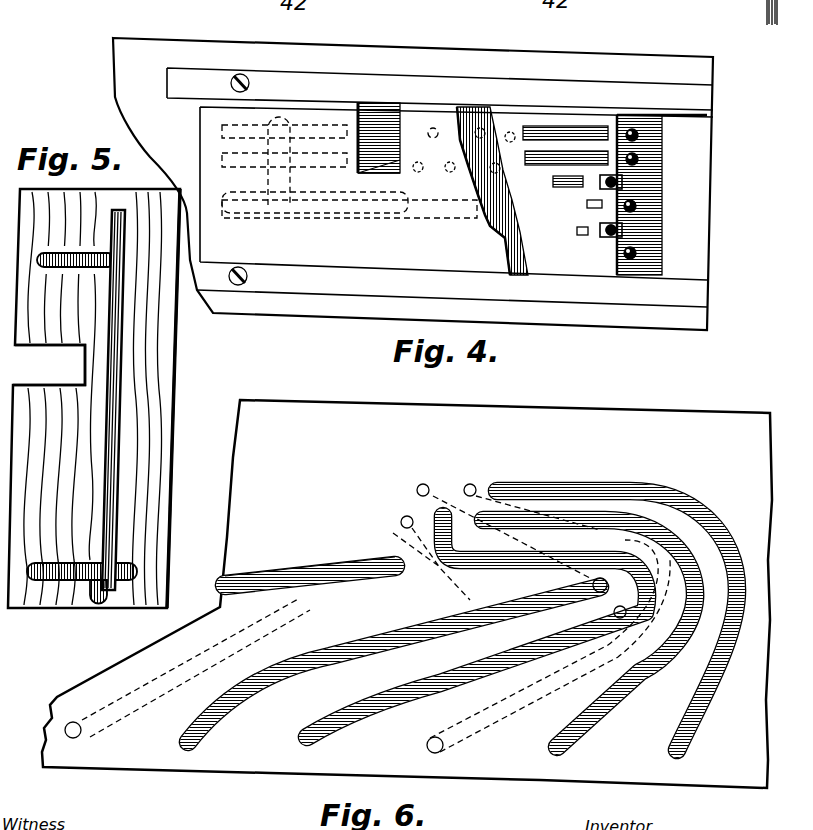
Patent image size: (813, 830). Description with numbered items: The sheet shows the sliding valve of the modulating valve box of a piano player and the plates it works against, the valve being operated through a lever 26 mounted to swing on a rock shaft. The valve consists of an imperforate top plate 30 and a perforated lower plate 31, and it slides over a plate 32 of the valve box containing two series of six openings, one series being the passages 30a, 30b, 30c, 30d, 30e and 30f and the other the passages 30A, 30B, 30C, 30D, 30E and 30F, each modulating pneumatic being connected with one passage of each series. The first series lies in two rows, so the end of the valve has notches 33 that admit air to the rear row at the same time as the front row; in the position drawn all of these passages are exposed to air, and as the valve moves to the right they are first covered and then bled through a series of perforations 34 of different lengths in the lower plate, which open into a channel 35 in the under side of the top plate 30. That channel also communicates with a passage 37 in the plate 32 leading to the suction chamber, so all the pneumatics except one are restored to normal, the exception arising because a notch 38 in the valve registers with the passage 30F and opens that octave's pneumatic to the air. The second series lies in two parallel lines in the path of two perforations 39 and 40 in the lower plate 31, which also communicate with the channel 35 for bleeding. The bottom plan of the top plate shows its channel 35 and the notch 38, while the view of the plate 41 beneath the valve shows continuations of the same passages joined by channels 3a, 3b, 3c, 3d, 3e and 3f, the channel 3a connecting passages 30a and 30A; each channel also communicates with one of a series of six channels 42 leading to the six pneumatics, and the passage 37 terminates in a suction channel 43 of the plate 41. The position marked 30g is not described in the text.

In FIG. 4, the lever 26 is at (768, 17).
In FIG. 4, the imperforate top plate 30 is at (377, 253).
In FIG. 5, the imperforate top plate 30 is at (168, 367).
In FIG. 4, the passage of the second series 30A is at (512, 133).
In FIG. 6, the passage of the second series 30A is at (505, 485).
In FIG. 4, the passage of the second series 30B is at (498, 173).
In FIG. 6, the passage of the second series 30B is at (440, 570).
In FIG. 4, the passage of the second series 30C is at (480, 128).
In FIG. 6, the passage of the second series 30C is at (471, 484).
In FIG. 4, the passage of the second series 30D is at (450, 173).
In FIG. 6, the passage of the second series 30D is at (440, 567).
In FIG. 4, the passage of the second series 30E is at (433, 128).
In FIG. 6, the passage of the second series 30E is at (423, 484).
In FIG. 4, the passage of the second series 30F is at (418, 173).
In FIG. 6, the passage of the second series 30F is at (401, 520).
In FIG. 4, the passage of the first series 30a is at (640, 135).
In FIG. 4, the passage of the first series 30b is at (640, 158).
In FIG. 6, the passage of the first series 30b is at (657, 480).
In FIG. 4, the passage of the first series 30c is at (622, 182).
In FIG. 6, the passage of the first series 30c is at (683, 505).
In FIG. 4, the passage of the first series 30d is at (637, 207).
In FIG. 6, the passage of the first series 30d is at (713, 530).
In FIG. 4, the passage of the first series 30e is at (622, 230).
In FIG. 6, the passage of the first series 30e is at (626, 610).
In FIG. 4, the passage of the first series 30f is at (634, 256).
In FIG. 6, the passage of the first series 30f is at (606, 588).
In FIG. 6, the hole 30g is at (597, 484).
In FIG. 4, the perforated lower plate 31 is at (600, 210).
In FIG. 4, the plate 32 is at (113, 90).
In FIG. 4, the notches 33 is at (600, 186).
In FIG. 4, the perforations 34 is at (600, 133).
In FIG. 4, the channel 35 is at (338, 217).
In FIG. 5, the channel 35 is at (113, 443).
In FIG. 4, the passage 37 is at (247, 213).
In FIG. 4, the notch 38 is at (398, 162).
In FIG. 5, the notch 38 is at (49, 365).
In FIG. 4, the perforation 39 is at (320, 128).
In FIG. 4, the perforation 40 is at (302, 157).
In FIG. 6, the plate 41 is at (290, 400).
In FIG. 6, the channels 42 is at (68, 722).
In FIG. 6, the suction channel 43 is at (253, 577).
In FIG. 6, the channel 3a is at (633, 483).
In FIG. 6, the channel 3b is at (632, 684).
In FIG. 6, the channel 3c is at (522, 688).
In FIG. 6, the channel 3d is at (410, 692).
In FIG. 6, the channel 3e is at (322, 658).
In FIG. 6, the channel 3f is at (312, 592).